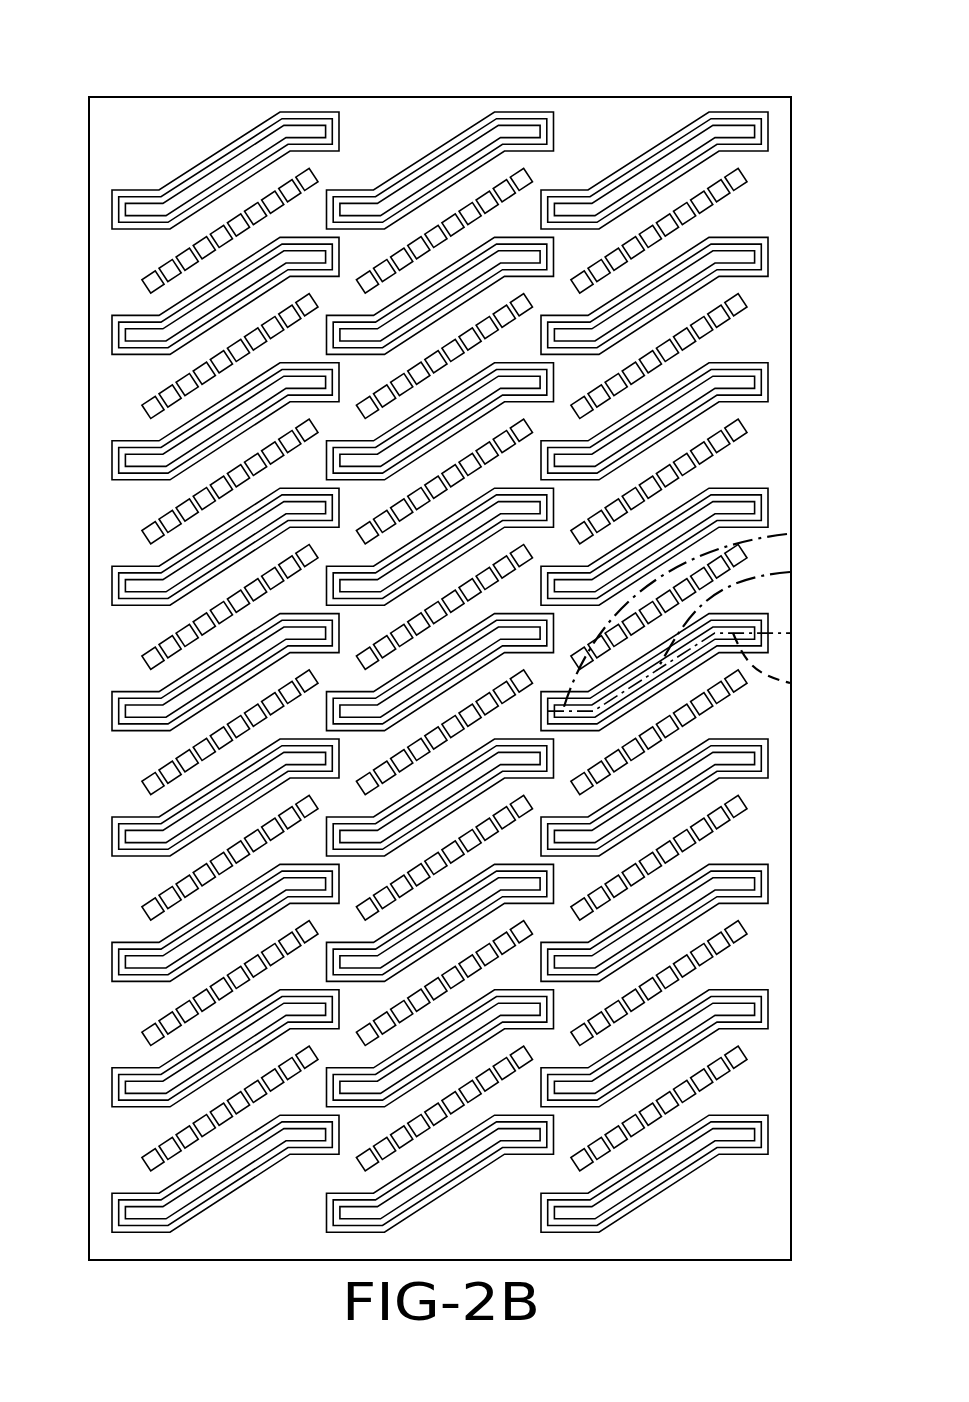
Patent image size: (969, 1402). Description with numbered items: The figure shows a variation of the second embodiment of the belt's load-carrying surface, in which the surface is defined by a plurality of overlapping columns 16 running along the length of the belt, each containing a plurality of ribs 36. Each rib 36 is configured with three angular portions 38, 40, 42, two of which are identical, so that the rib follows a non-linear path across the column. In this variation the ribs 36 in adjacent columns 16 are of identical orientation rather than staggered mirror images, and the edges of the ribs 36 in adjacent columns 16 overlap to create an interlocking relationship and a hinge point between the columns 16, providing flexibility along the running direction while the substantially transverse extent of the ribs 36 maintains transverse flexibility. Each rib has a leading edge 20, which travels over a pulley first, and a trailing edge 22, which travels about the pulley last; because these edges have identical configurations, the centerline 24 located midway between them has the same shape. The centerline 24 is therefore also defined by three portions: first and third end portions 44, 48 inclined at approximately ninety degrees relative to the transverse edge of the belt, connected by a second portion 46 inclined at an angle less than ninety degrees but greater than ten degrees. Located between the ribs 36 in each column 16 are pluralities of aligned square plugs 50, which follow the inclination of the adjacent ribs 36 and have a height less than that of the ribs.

The columns 16 is at (193, 90).
The leading edge 20 is at (675, 428).
The trailing edge 22 is at (730, 360).
The centerline 24 is at (632, 683).
The ribs 36 is at (737, 380).
The first angular portion 38 is at (137, 335).
The second angular portion 40 is at (212, 295).
The third angular portion 42 is at (300, 248).
The first portion of the rib centerline 44 is at (787, 534).
The second portion of the rib centerline 46 is at (790, 572).
The third portion of the rib centerline 48 is at (790, 683).
The square plugs 50 is at (733, 180).